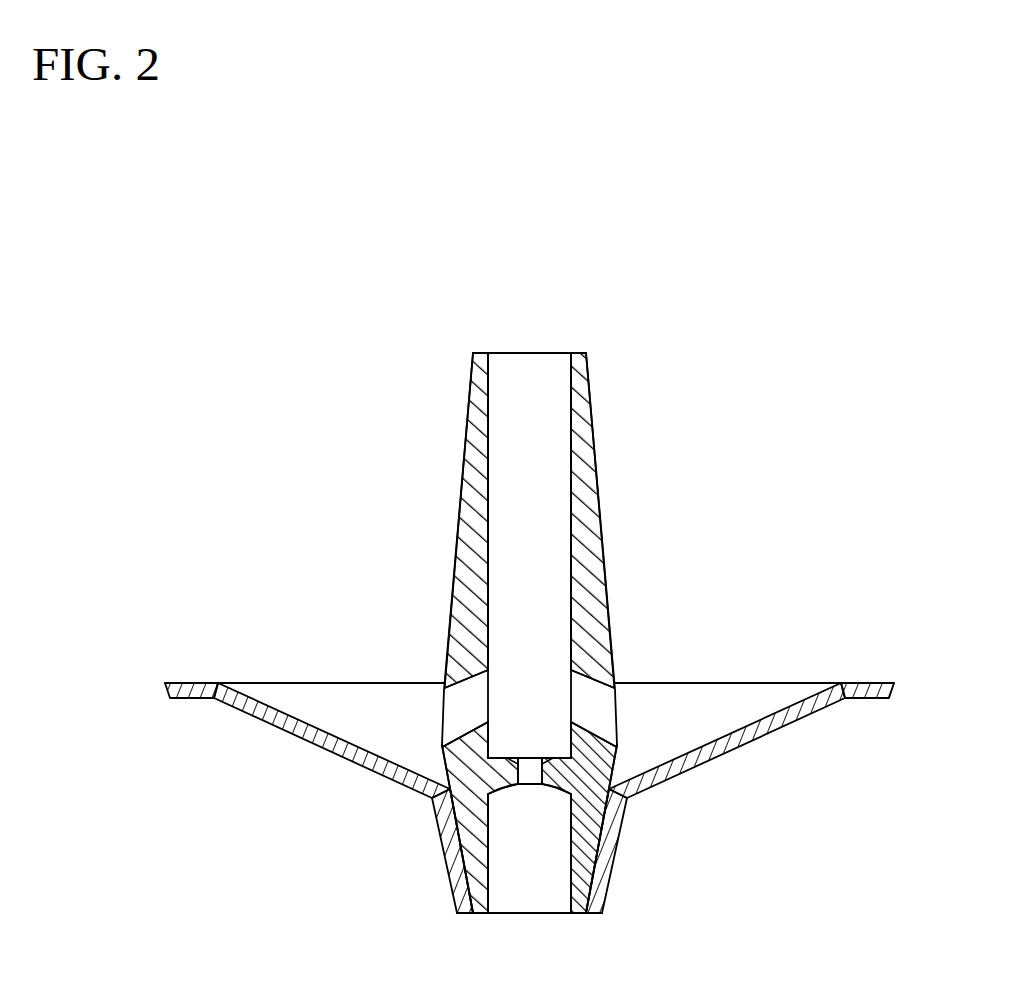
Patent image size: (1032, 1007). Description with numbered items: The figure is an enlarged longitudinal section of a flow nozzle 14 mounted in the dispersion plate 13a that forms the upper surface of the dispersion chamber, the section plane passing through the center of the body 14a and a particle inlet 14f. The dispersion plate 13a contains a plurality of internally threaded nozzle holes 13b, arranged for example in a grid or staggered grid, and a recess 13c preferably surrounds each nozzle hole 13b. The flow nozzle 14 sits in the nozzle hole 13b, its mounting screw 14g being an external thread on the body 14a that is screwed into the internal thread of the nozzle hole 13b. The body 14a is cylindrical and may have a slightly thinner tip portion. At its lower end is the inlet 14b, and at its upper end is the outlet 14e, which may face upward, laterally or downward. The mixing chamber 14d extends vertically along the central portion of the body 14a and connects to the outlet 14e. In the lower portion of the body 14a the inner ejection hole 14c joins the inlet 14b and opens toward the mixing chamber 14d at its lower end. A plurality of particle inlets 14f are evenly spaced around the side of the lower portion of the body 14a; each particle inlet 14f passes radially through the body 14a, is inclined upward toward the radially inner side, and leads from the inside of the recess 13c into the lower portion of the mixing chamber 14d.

The dispersion plate 13a is at (876, 683).
The nozzle hole 13b is at (620, 801).
The recess 13c is at (772, 712).
The flow nozzle 14 is at (580, 635).
The body 14a is at (600, 508).
The inlet 14b is at (572, 913).
The inner ejection hole 14c is at (517, 790).
The mixing chamber 14d is at (490, 518).
The outlet 14e is at (488, 352).
The particle inlet 14f is at (445, 698).
The mounting screw 14g is at (605, 839).